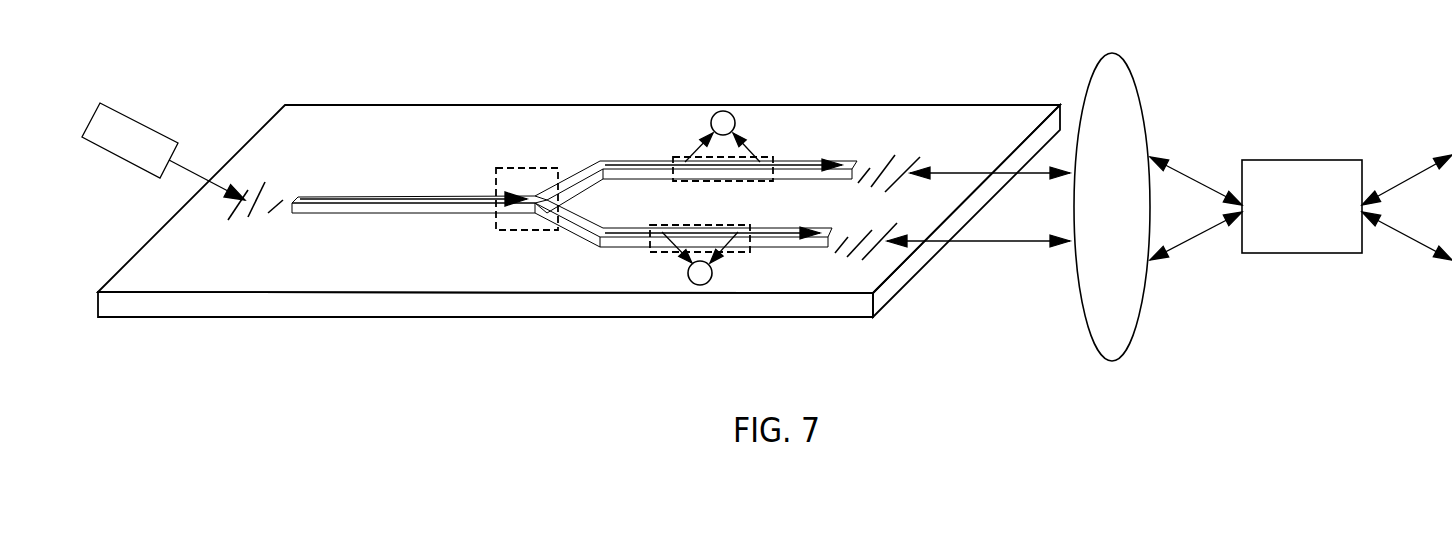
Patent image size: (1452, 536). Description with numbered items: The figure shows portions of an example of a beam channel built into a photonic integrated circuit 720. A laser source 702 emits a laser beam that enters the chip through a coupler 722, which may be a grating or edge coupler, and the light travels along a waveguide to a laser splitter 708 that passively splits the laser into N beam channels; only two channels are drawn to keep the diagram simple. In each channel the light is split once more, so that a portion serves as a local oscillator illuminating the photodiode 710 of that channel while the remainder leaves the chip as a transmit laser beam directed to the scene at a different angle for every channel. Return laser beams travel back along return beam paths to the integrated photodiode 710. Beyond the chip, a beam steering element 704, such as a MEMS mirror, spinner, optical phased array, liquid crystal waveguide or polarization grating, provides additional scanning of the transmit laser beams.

The laser source 702 is at (148, 128).
The beam steering element 704 is at (1303, 160).
The laser splitter 708 is at (528, 167).
The photodiode 710 is at (723, 185).
The photonic integrated circuit 720 is at (673, 105).
The coupler 722 is at (270, 193).